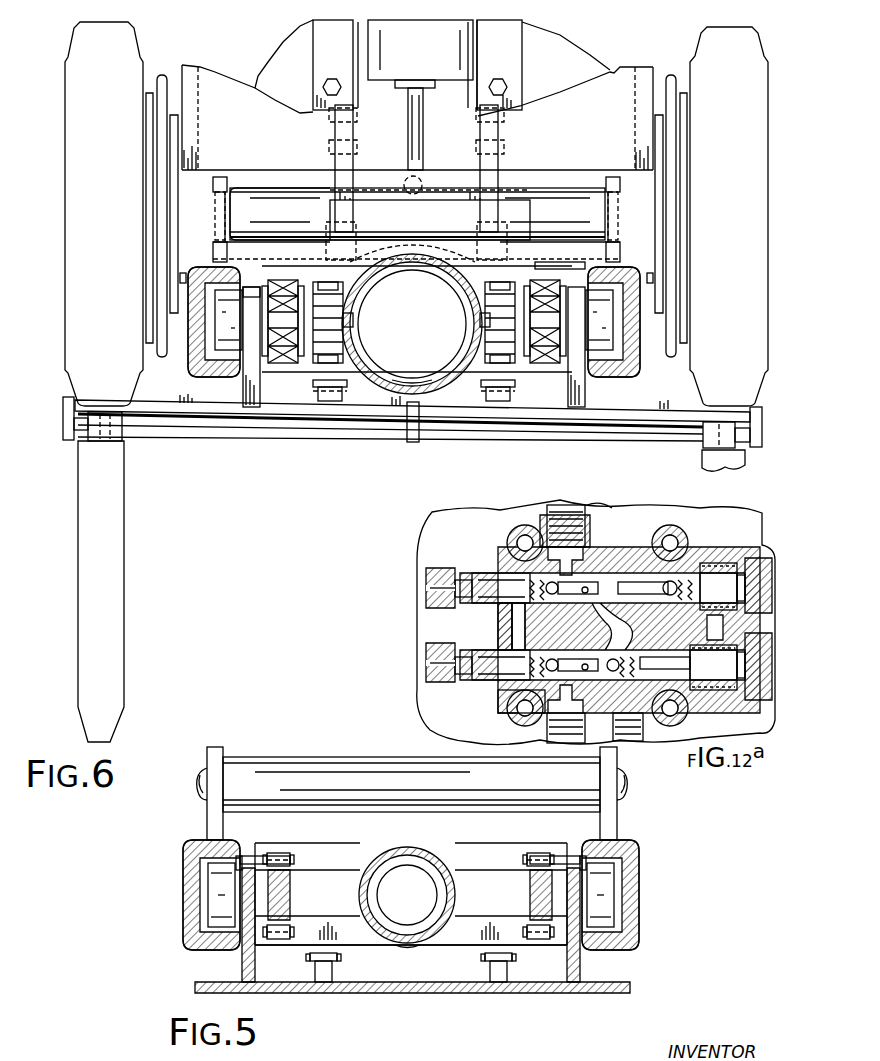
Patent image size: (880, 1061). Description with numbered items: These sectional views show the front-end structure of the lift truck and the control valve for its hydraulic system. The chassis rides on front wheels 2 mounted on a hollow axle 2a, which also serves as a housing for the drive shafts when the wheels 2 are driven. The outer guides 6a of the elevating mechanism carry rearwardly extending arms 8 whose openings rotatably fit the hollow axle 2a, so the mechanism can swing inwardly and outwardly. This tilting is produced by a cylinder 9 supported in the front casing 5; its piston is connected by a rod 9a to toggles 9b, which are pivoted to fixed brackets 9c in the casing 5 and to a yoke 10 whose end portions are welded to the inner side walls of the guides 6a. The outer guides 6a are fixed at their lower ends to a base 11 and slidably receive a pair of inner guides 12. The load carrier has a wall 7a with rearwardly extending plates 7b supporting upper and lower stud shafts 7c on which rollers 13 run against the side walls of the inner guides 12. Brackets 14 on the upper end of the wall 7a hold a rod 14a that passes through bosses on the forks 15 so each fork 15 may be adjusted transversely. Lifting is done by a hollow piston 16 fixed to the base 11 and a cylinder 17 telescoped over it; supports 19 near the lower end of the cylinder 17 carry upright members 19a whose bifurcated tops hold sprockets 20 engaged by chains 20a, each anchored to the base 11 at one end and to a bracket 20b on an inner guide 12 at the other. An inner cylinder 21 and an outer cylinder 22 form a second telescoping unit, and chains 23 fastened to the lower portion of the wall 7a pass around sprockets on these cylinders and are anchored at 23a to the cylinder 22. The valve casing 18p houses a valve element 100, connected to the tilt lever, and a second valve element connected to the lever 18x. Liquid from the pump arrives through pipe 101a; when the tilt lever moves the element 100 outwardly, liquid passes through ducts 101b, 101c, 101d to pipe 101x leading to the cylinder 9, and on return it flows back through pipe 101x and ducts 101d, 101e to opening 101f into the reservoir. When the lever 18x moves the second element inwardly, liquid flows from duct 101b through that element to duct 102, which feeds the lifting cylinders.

In FIG. 6, the front wheels 2 is at (66, 178).
In FIG. 6, the casing 5 is at (417, 95).
In FIG. 6, the cylinder 9 is at (417, 65).
In FIG. 6, the rod 9a is at (408, 142).
In FIG. 6, the toggles 9b is at (335, 152).
In FIG. 6, the fixed brackets 9c is at (505, 68).
In FIG. 6, the hollow axle 2a is at (575, 190).
In FIG. 5, the hollow axle 2a is at (322, 770).
In FIG. 6, the yoke 10 is at (242, 240).
In FIG. 6, the arms 8 is at (224, 180).
In FIG. 5, the arms 8 is at (207, 777).
In FIG. 6, the inner guides 12 is at (194, 376).
In FIG. 5, the inner guides 12 is at (183, 936).
In FIG. 6, the outer guides 6a is at (188, 340).
In FIG. 5, the outer guides 6a is at (183, 900).
In FIG. 6, the rollers 13 is at (414, 320).
In FIG. 5, the rollers 13 is at (218, 884).
In FIG. 6, the plates 7b is at (243, 393).
In FIG. 5, the plates 7b is at (242, 970).
In FIG. 6, the stud shafts 7c is at (252, 287).
In FIG. 5, the stud shafts 7c is at (242, 860).
In FIG. 6, the sprocket 20 is at (282, 363).
In FIG. 6, the chain 20a is at (550, 280).
In FIG. 5, the chain 20a is at (285, 853).
In FIG. 5, the bracket 20b is at (258, 856).
In FIG. 6, the chains 23 is at (325, 282).
In FIG. 5, the chains 23 is at (337, 957).
In FIG. 6, the chain anchorage 23a is at (353, 322).
In FIG. 6, the inner cylinder 21 is at (392, 375).
In FIG. 6, the outer cylinder 22 is at (428, 384).
In FIG. 6, the base 11 is at (348, 372).
In FIG. 5, the base 11 is at (468, 945).
In FIG. 6, the wall 7a is at (684, 411).
In FIG. 5, the wall 7a is at (355, 993).
In FIG. 6, the brackets 14 is at (68, 440).
In FIG. 6, the rod 14a is at (205, 440).
In FIG. 6, the forks 15 is at (112, 528).
In FIG. 12A, the lever 18x is at (465, 540).
In FIG. 12A, the valve casing 18p is at (632, 550).
In FIG. 12A, the valve element 100 is at (483, 575).
In FIG. 12A, the duct 101e is at (498, 615).
In FIG. 12A, the opening 101f is at (512, 630).
In FIG. 12A, the duct 101c is at (689, 629).
In FIG. 12A, the duct 101d is at (552, 512).
In FIG. 12A, the pipe 101x is at (585, 505).
In FIG. 12A, the pipe 101a is at (630, 735).
In FIG. 12A, the duct 101b is at (605, 695).
In FIG. 12A, the duct 102 is at (505, 713).
In FIG. 5, the supports 19 is at (337, 916).
In FIG. 5, the upright members 19a is at (293, 880).
In FIG. 5, the piston 16 is at (390, 935).
In FIG. 5, the cylinder 17 is at (425, 945).